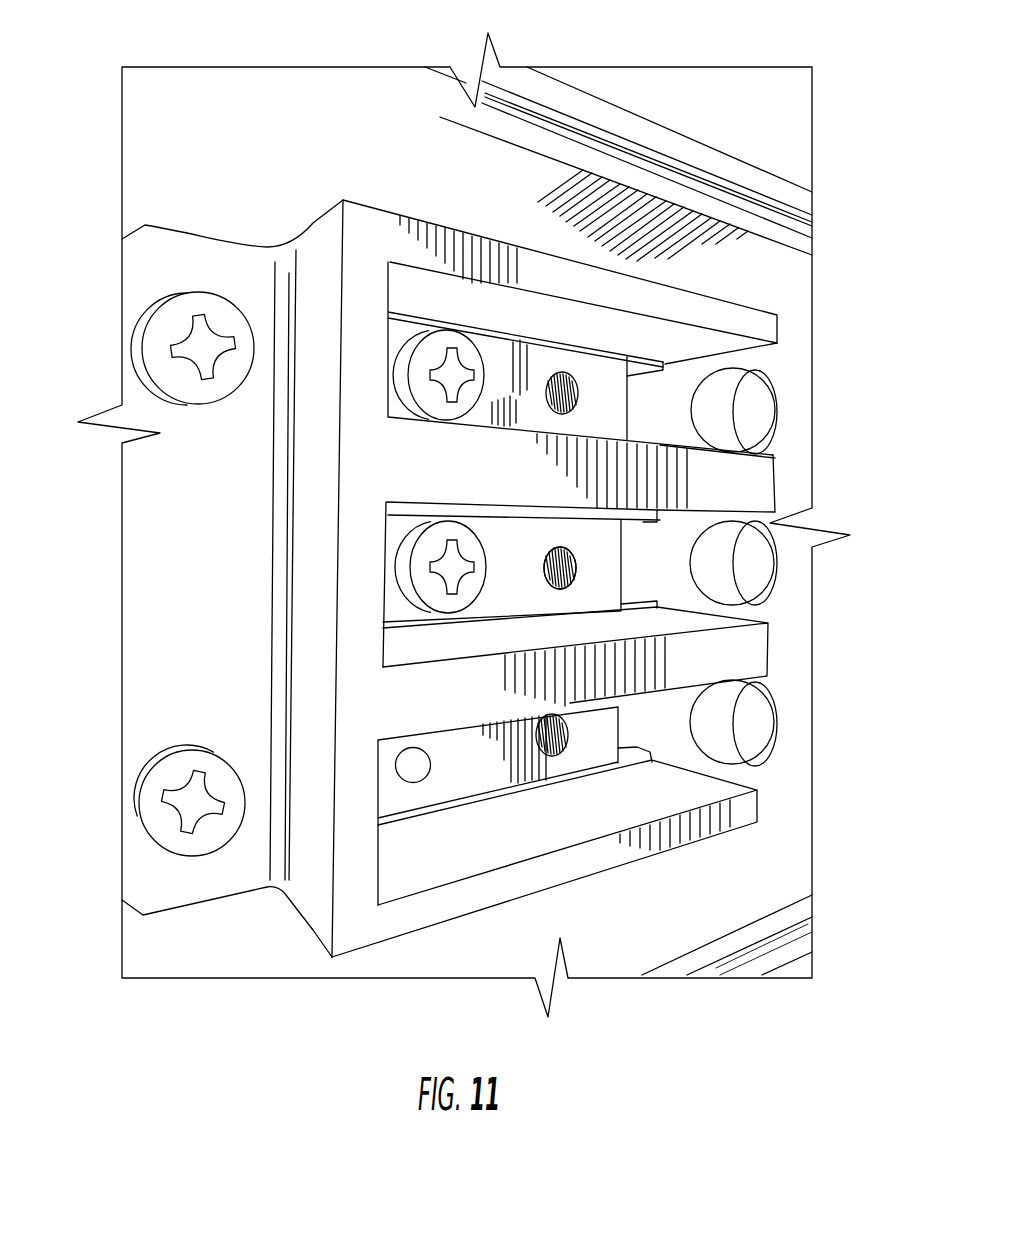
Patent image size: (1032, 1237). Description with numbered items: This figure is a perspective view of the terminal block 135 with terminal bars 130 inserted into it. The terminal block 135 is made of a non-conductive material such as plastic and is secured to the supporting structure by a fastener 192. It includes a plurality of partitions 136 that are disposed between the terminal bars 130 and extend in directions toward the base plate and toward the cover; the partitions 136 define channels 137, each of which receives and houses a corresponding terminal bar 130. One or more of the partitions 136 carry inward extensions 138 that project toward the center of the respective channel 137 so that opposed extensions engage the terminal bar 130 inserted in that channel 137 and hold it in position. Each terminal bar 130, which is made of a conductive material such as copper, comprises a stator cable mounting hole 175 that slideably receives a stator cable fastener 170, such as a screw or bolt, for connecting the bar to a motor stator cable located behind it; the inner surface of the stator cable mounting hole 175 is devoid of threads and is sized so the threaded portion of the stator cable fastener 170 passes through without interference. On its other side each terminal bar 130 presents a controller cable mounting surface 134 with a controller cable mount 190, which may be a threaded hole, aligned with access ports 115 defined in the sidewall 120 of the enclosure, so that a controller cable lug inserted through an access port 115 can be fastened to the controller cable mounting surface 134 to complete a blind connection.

The access port 115 is at (757, 418).
The sidewall 120 is at (753, 723).
The terminal bar 130 is at (510, 363).
The controller cable mounting surface 134 is at (587, 357).
The terminal block 135 is at (445, 898).
The partition 136 is at (697, 300).
The channel 137 is at (650, 391).
The inward extension 138 is at (633, 600).
The stator cable fastener 170 is at (450, 328).
The stator cable mounting hole 175 is at (398, 755).
The controller cable mount 190 is at (575, 553).
The fastener 192 is at (178, 745).